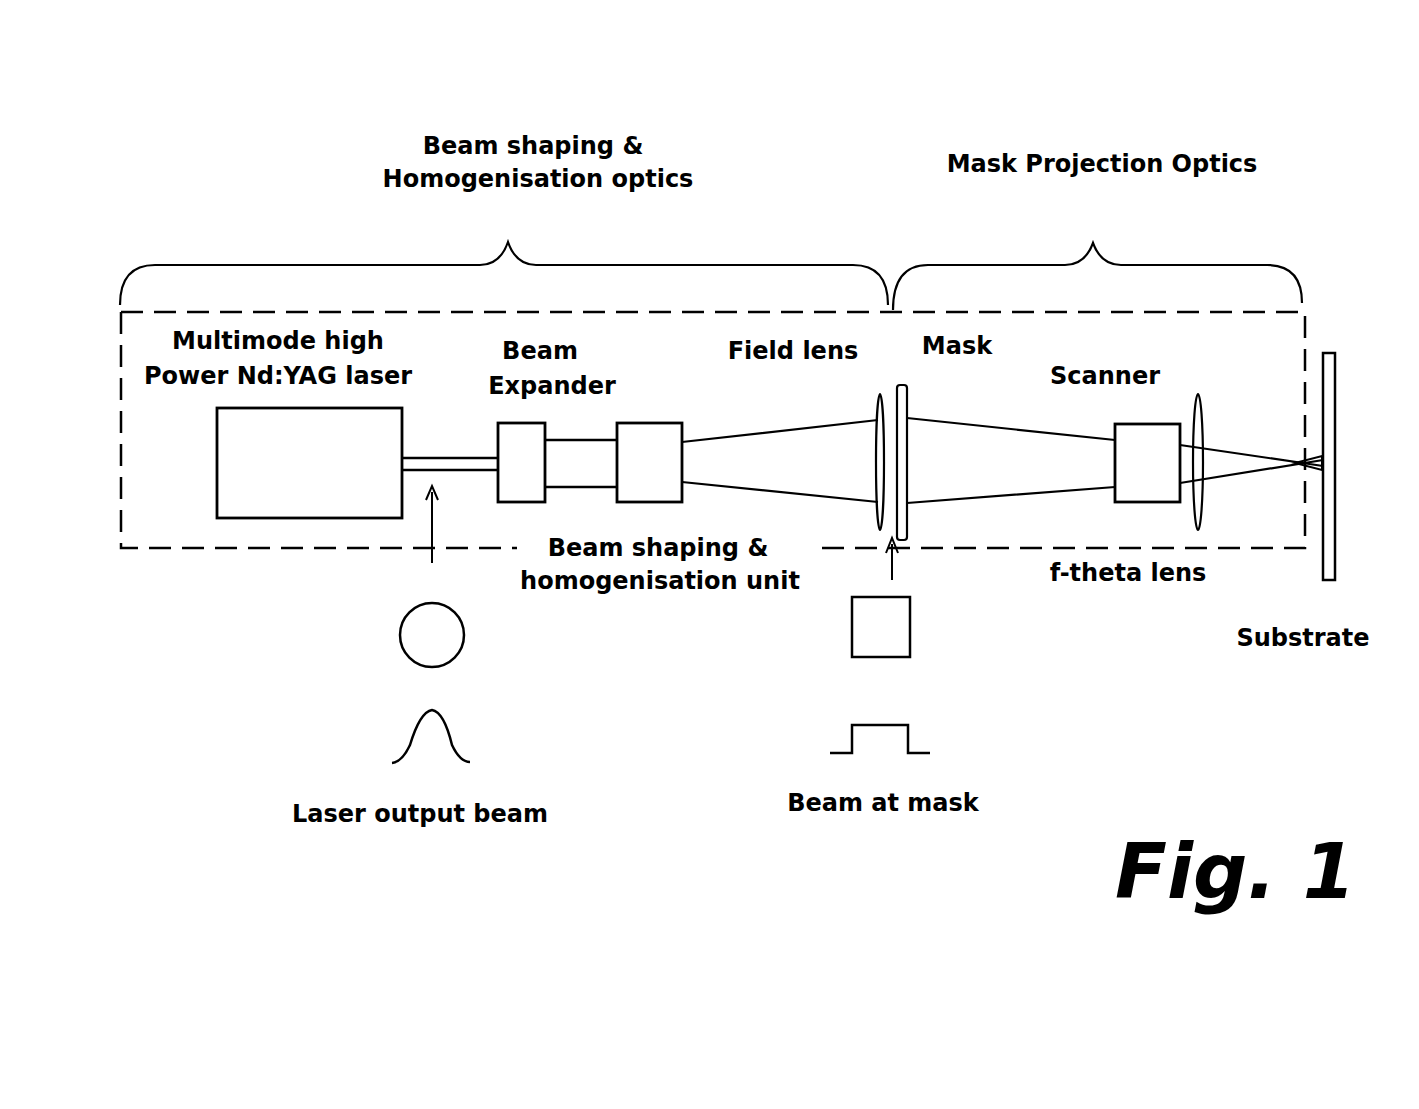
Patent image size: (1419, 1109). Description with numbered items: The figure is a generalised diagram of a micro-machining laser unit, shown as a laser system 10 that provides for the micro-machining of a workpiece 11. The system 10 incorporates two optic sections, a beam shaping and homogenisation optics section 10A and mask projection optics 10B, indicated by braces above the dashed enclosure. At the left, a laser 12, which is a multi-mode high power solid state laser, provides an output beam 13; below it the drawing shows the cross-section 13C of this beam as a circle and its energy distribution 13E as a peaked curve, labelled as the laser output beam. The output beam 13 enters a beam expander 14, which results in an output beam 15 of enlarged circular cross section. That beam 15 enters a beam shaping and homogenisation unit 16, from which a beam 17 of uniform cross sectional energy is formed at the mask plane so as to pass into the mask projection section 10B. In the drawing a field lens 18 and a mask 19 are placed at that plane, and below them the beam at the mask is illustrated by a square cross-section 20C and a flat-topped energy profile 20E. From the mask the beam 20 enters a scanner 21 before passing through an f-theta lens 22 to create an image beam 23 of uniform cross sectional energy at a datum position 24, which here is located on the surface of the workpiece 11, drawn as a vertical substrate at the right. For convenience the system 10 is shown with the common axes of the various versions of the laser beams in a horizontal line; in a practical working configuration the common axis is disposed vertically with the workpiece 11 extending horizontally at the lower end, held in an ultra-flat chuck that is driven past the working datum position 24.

The laser system 10 is at (243, 548).
The beam shaping and homogenisation optics section 10A is at (504, 254).
The mask projection optics 10B is at (1097, 256).
The workpiece 11 is at (1327, 567).
The laser 12 is at (309, 463).
The output beam 13 is at (428, 453).
The cross-section 13C is at (445, 633).
The energy distribution 13E is at (442, 730).
The beam expander 14 is at (521, 462).
The output beam of enlarged circular cross section 15 is at (577, 452).
The beam shaping and homogenisation unit 16 is at (649, 462).
The beam of uniform cross sectional energy 17 is at (765, 448).
The field lens 18 is at (878, 405).
The mask 19 is at (905, 402).
The beam 20 is at (988, 480).
The beam cross-section at mask 20C is at (888, 625).
The beam energy profile at mask 20E is at (860, 737).
The scanner 21 is at (1130, 435).
The f-theta lens 22 is at (1203, 420).
The image beam 23 is at (1223, 463).
The datum position 24 is at (1318, 462).